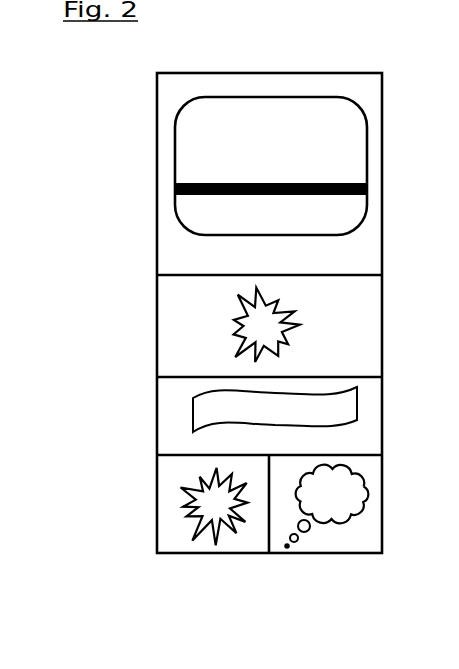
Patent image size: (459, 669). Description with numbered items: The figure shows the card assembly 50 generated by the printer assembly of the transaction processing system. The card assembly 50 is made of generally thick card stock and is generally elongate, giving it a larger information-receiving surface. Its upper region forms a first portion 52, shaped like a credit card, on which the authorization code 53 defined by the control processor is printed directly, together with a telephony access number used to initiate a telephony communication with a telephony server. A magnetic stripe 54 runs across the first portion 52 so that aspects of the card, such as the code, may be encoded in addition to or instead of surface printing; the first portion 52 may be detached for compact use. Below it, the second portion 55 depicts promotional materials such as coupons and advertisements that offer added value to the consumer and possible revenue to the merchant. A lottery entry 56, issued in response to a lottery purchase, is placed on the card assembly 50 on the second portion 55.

The card assembly 50 is at (156, 249).
The first portion 52 is at (224, 125).
The authorization code 53 is at (245, 123).
The magnetic stripe 54 is at (183, 190).
The second portion 55 is at (187, 358).
The lottery entry 56 is at (193, 432).